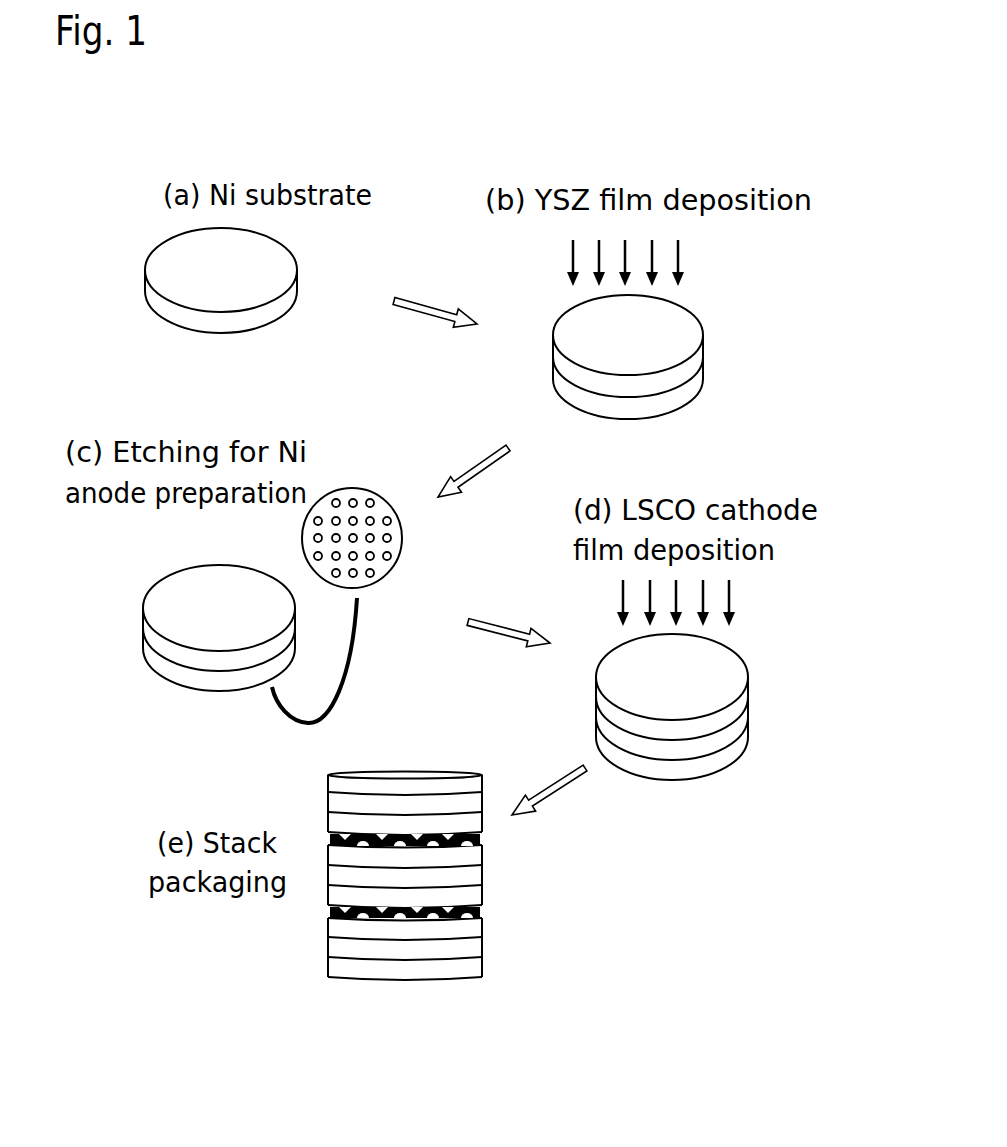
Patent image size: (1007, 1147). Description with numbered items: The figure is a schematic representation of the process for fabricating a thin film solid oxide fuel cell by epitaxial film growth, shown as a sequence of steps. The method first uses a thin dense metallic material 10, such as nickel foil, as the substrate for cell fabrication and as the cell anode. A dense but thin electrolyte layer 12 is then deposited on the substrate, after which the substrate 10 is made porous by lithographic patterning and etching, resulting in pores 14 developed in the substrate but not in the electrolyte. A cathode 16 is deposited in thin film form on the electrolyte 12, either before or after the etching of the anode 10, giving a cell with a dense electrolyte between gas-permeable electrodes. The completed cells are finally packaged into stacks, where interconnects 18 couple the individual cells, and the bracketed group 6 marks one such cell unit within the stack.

The thin dense metallic material 10 is at (295, 302).
The electrolyte layer 12 is at (703, 343).
The pores 14 is at (387, 557).
The cathode 16 is at (758, 678).
The interconnects 18 is at (330, 838).
The unit cell 6 is at (318, 922).